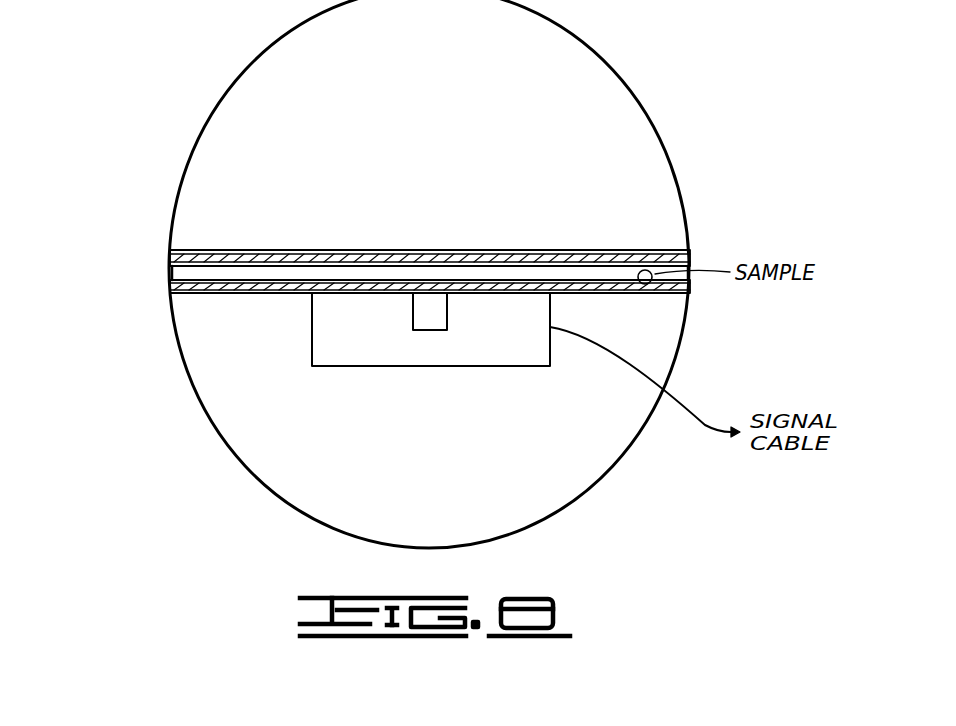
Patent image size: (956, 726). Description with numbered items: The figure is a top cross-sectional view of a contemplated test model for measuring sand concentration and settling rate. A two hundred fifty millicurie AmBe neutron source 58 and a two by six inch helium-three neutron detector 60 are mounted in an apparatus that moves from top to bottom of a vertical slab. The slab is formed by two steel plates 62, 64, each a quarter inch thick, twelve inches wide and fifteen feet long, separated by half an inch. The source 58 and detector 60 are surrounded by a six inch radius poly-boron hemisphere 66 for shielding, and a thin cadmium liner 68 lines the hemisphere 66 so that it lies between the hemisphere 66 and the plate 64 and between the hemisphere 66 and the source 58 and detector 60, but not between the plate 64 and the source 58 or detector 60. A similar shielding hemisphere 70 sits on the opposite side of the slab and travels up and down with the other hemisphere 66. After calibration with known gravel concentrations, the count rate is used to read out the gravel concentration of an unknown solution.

The AmBe neutron source 58 is at (428, 322).
The He-3 neutron detector 60 is at (487, 353).
The steel plate 62 is at (170, 256).
The steel plate 64 is at (170, 286).
The poly-boron hemisphere 66 is at (218, 380).
The cadmium liner 68 is at (649, 283).
The shielding hemisphere 70 is at (600, 49).